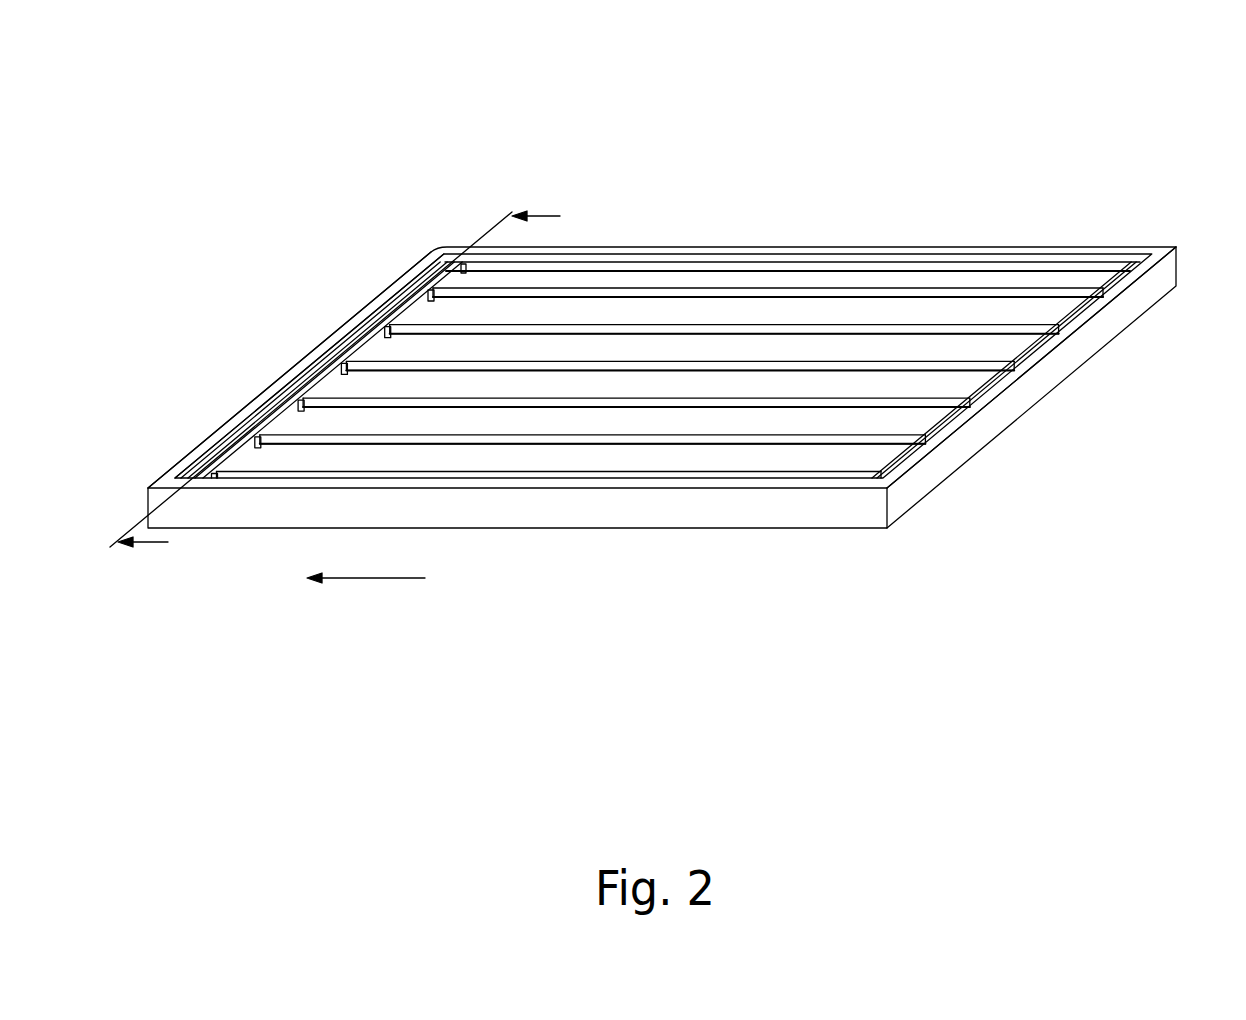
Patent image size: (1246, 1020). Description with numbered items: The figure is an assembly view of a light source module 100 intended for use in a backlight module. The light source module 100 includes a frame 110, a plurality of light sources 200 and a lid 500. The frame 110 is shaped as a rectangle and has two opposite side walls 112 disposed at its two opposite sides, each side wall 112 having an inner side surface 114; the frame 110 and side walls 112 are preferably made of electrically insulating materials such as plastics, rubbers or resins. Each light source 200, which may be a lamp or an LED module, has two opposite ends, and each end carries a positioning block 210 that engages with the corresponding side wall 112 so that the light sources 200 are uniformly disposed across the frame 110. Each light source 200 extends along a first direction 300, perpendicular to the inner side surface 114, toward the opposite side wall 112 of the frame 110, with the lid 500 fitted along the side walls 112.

The light source module 100 is at (432, 44).
The frame 110 is at (612, 247).
The side wall 112 is at (268, 390).
The inner side surface 114 is at (233, 458).
The light source 200 is at (780, 293).
The positioning block 210 is at (445, 286).
The first direction 300 is at (390, 580).
The lid 500 is at (397, 303).